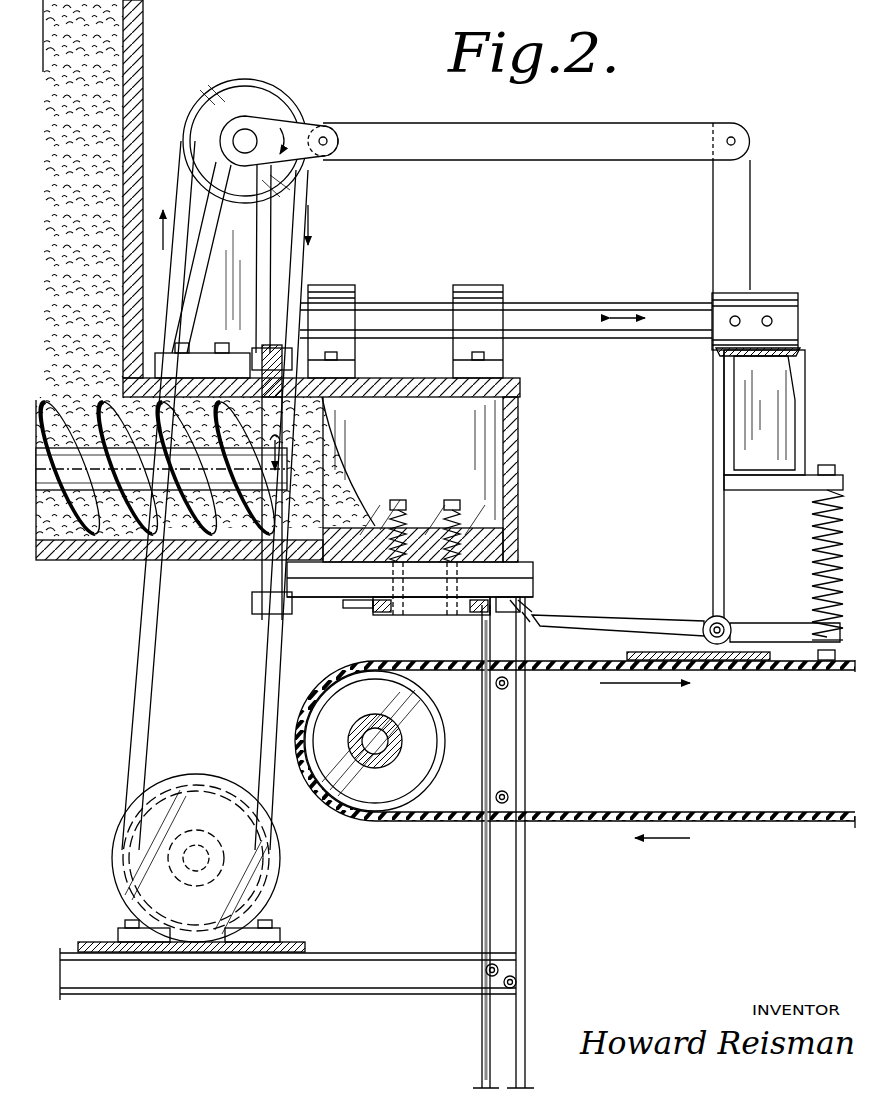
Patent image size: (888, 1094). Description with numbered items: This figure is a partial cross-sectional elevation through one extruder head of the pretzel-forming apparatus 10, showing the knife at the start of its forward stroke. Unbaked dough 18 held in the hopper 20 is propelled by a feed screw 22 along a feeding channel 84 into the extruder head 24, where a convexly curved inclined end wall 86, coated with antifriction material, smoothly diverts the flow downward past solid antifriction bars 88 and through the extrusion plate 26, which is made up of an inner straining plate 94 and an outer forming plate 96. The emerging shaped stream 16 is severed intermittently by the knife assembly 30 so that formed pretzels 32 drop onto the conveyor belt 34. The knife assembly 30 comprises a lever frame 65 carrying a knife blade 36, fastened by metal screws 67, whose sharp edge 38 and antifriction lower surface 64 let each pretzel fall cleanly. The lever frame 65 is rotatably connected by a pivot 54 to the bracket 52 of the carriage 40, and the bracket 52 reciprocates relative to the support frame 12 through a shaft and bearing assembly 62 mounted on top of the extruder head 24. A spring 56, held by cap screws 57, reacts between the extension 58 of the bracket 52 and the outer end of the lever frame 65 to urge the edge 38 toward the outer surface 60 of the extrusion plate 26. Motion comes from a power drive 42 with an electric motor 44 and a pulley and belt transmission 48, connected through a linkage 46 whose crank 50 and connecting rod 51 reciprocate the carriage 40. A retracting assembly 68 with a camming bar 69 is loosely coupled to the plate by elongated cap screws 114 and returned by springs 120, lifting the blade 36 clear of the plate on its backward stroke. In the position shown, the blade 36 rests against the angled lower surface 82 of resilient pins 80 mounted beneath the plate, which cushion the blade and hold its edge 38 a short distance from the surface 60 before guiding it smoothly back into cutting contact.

The apparatus 10 is at (765, 190).
The support frame 12 is at (525, 882).
The shaped streams 16 is at (360, 608).
The unbaked dough 18 is at (205, 468).
The hopper 20 is at (143, 40).
The feed screw 22 is at (145, 540).
The extruder head 24 is at (520, 392).
The extrusion plate 26 is at (536, 562).
The knife assembly 30 is at (738, 612).
The formed pretzels 32 is at (640, 655).
The conveyor belt 34 is at (745, 672).
The knife blade 36 is at (655, 612).
The sharp edge 38 is at (496, 612).
The carriage 40 is at (800, 296).
The power drive 42 is at (108, 832).
The electric motor 44 is at (207, 915).
The linkage 46 is at (641, 125).
The pulley and belt transmission 48 is at (312, 195).
The crank 50 is at (322, 128).
The connecting rod 51 is at (468, 150).
The bracket 52 is at (715, 448).
The pivot 54 is at (728, 625).
The spring 56 is at (812, 520).
The cap screws 57 is at (812, 590).
The extension 58 is at (812, 480).
The outer surface 60 is at (305, 598).
The reciprocating shaft and bearing assembly 62 is at (506, 294).
The lower surface 64 is at (516, 612).
The lever frame 65 is at (672, 625).
The metal screws 67 is at (818, 645).
The retracting assembly 68 is at (418, 616).
The camming bar 69 is at (480, 612).
The pins 80 is at (525, 610).
The lower surface 82 is at (528, 622).
The feeding channel 84 is at (42, 560).
The end wall 86 is at (340, 452).
The bars 88 is at (378, 540).
The inner straining plate 94 is at (533, 572).
The outer forming plate 96 is at (533, 590).
The cap screws 114 is at (415, 506).
The springs 120 is at (445, 516).